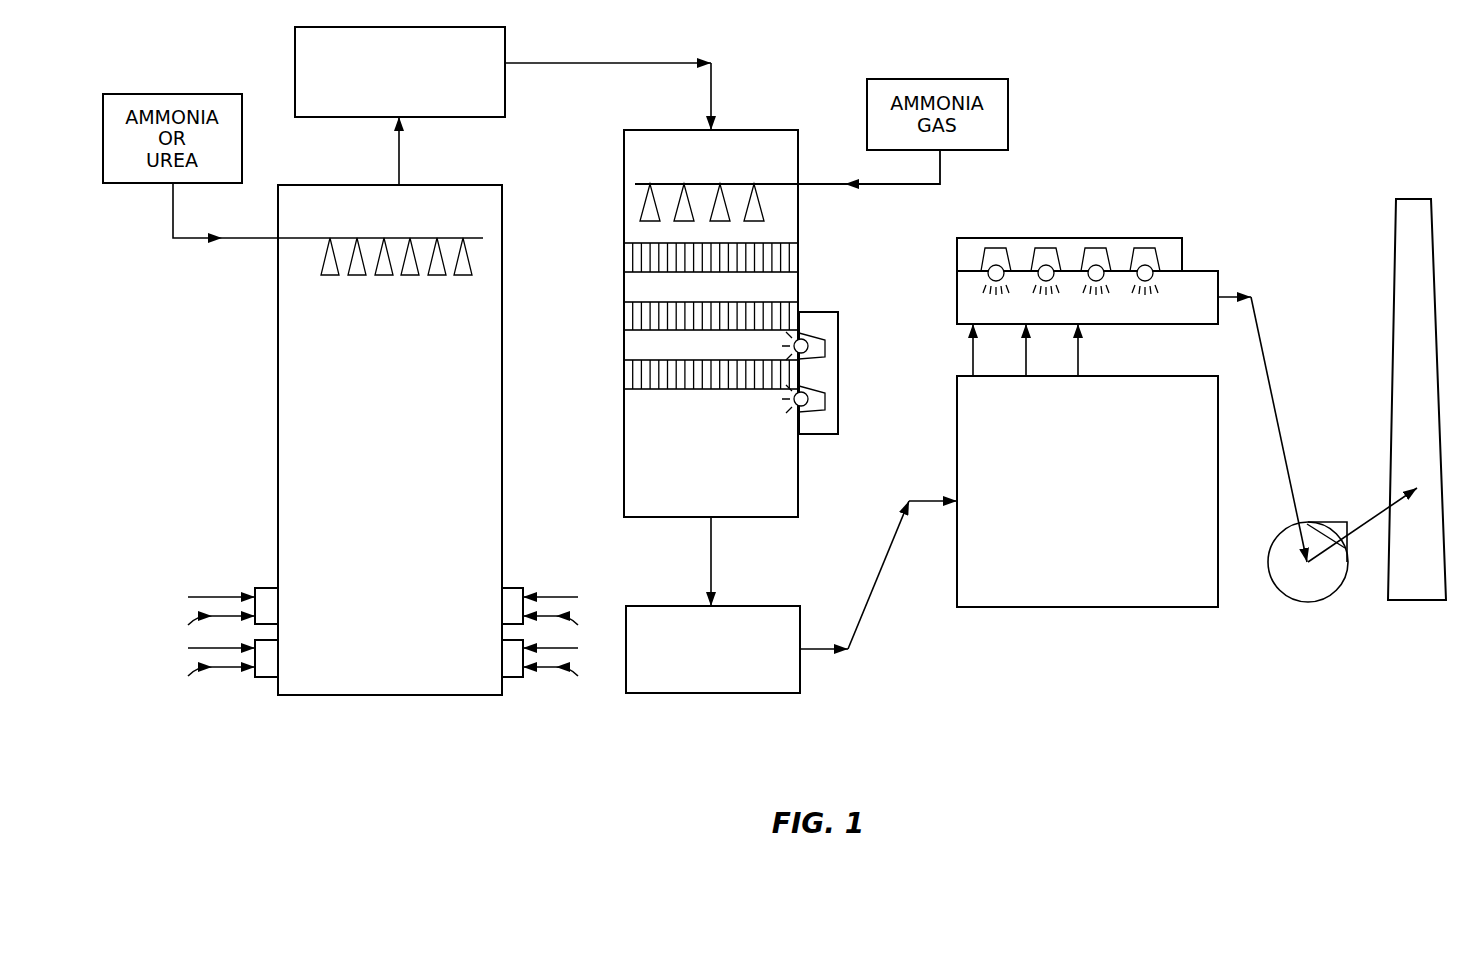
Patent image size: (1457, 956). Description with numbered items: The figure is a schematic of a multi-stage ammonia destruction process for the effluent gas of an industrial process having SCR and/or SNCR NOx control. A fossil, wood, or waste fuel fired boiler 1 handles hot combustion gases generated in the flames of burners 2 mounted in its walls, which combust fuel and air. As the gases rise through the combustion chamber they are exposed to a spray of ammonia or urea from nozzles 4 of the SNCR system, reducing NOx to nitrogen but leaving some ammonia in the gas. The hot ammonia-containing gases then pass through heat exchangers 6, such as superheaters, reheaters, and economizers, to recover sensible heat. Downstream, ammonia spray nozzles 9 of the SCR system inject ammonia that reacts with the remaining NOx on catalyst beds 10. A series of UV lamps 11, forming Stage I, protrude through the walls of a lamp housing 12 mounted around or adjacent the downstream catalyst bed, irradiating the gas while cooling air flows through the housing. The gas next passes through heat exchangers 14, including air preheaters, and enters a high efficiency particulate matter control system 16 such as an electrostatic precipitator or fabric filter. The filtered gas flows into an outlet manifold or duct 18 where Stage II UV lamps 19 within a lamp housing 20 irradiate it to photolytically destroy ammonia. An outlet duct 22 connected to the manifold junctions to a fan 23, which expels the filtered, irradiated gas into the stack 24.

The boiler 1 is at (278, 325).
The burners 2 is at (233, 688).
The nozzles 4 is at (305, 257).
The heat exchangers 6 is at (295, 63).
The ammonia spray nozzles 9 is at (628, 203).
The catalyst beds 10 is at (616, 308).
The UV lamps 11 is at (812, 397).
The lamp housing 12 is at (838, 414).
The heat exchangers 14 is at (763, 693).
The particulate matter control system 16 is at (1163, 607).
The outlet manifold or duct 18 is at (973, 305).
The UV lamps 19 is at (1147, 262).
The lamp housing 20 is at (1182, 252).
The outlet duct 22 is at (1283, 435).
The fan 23 is at (1315, 602).
The stack 24 is at (1394, 258).